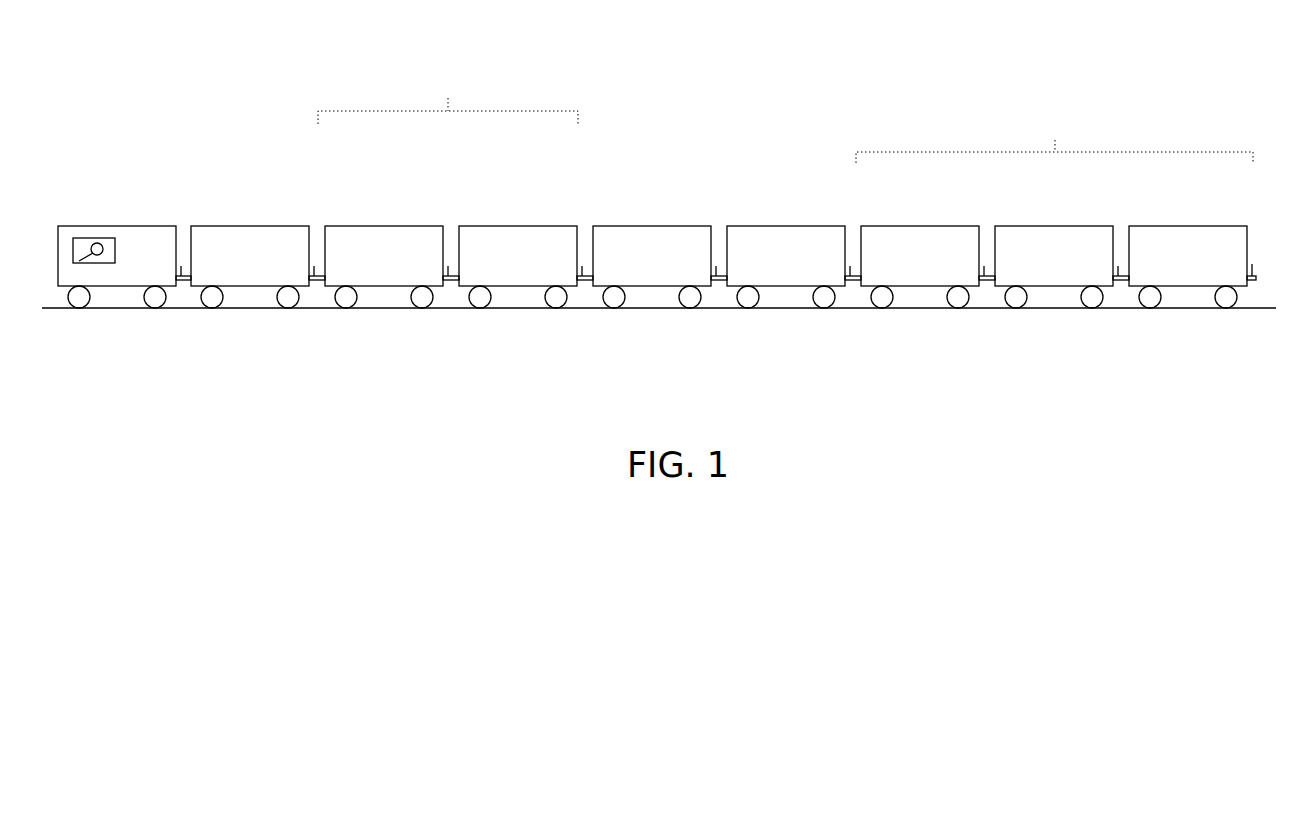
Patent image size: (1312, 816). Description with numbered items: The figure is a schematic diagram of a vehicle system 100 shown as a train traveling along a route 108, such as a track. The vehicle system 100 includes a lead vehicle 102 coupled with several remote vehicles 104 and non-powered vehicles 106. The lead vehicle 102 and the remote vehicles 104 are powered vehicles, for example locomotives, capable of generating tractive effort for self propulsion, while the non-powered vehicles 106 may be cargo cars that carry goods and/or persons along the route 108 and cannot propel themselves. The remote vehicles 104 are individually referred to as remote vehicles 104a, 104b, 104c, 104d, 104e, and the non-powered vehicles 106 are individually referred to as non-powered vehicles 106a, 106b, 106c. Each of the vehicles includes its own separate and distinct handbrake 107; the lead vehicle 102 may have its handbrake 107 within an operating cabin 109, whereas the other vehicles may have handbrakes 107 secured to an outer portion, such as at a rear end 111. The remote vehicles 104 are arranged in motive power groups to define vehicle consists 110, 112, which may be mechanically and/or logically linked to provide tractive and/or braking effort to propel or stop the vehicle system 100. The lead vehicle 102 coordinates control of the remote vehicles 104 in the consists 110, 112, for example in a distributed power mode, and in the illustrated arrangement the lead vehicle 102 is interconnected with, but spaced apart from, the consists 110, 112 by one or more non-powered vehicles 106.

The vehicle system 100 is at (1132, 51).
The lead vehicle 102 is at (117, 261).
The remote vehicles 104 is at (786, 251).
The remote vehicle 104a is at (384, 288).
The remote vehicle 104b is at (513, 288).
The remote vehicle 104c is at (919, 288).
The remote vehicle 104d is at (1055, 288).
The remote vehicle 104e is at (1189, 288).
The non-powered vehicles 106 is at (518, 251).
The non-powered vehicle 106a is at (250, 288).
The non-powered vehicle 106b is at (653, 288).
The non-powered vehicle 106c is at (784, 226).
The handbrake 107 is at (98, 244).
The route 108 is at (800, 310).
The operating cabin 109 is at (119, 262).
The vehicle consist 110 is at (448, 101).
The rear end 111 is at (318, 292).
The vehicle consist 112 is at (1054, 140).